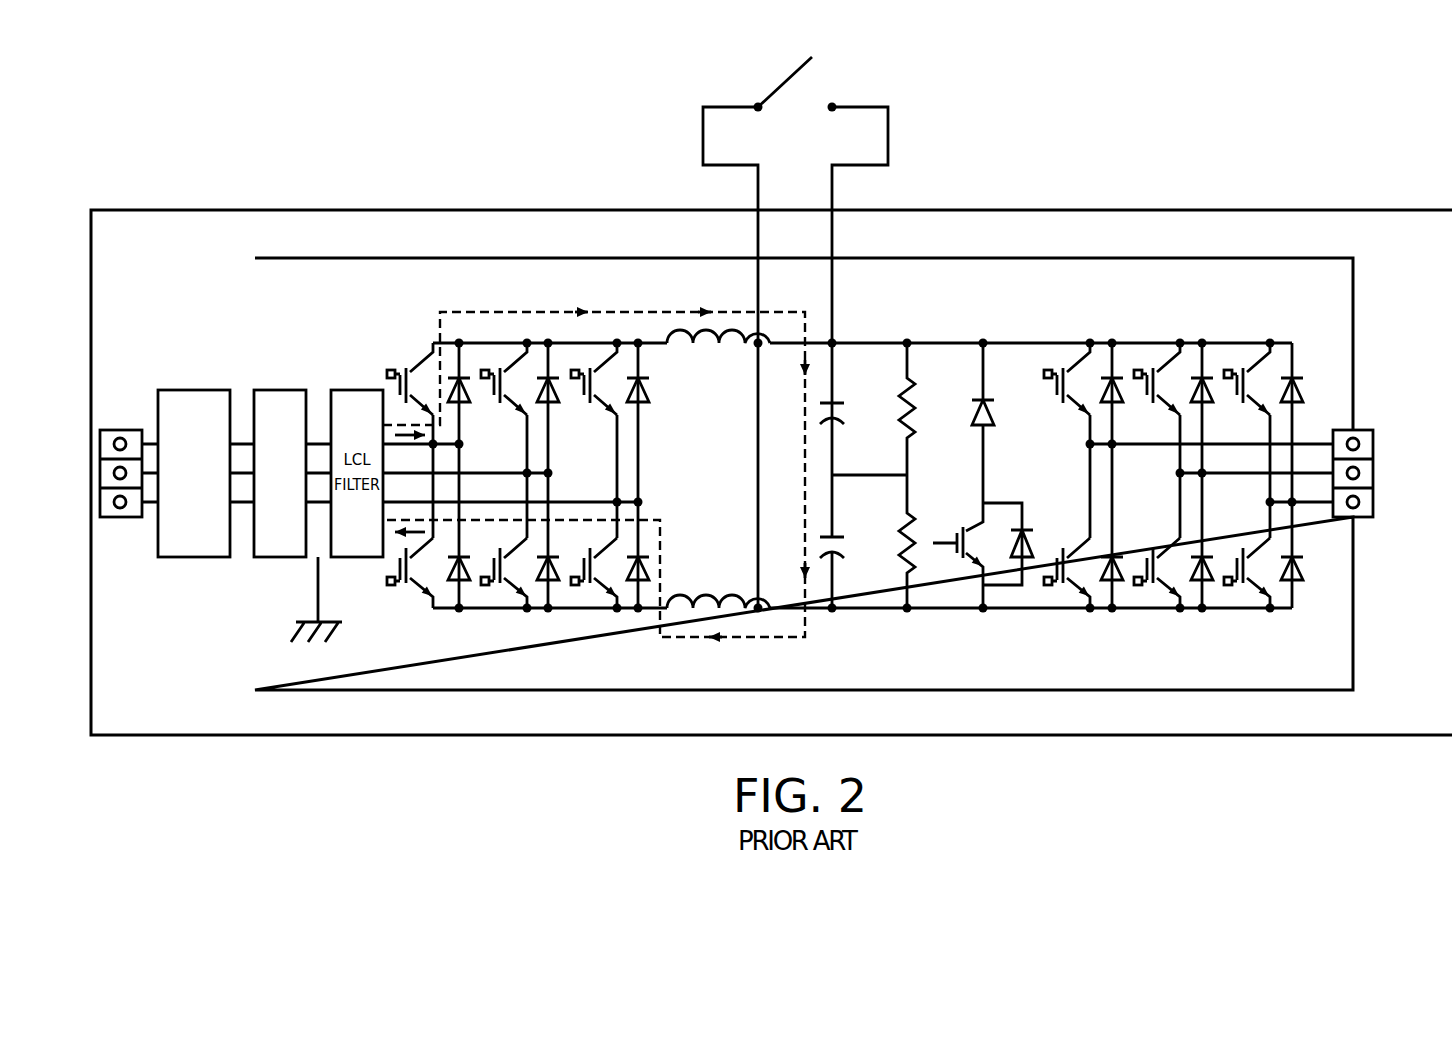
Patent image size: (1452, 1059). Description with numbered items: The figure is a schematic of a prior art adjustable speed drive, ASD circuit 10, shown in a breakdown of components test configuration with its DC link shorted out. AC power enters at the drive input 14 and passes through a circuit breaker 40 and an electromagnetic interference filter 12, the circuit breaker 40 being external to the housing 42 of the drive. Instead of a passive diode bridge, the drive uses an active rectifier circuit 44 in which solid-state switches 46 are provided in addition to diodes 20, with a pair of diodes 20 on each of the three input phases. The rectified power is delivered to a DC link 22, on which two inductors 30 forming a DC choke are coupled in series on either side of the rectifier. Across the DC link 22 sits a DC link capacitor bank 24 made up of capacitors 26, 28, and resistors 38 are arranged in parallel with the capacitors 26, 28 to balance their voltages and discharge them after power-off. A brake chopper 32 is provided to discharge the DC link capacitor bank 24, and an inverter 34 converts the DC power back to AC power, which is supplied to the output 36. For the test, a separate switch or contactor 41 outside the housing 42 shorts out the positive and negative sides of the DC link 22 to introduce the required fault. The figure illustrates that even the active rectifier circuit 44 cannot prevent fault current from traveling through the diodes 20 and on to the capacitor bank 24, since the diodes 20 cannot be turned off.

The ASD circuit 10 is at (1218, 172).
The electromagnetic interference (EMI) filter 12 is at (280, 390).
The drive input 14 is at (123, 428).
The diodes 20 is at (643, 407).
The DC link 22 is at (750, 612).
The DC link capacitor bank 24 is at (805, 482).
The capacitor 26 is at (838, 402).
The capacitor 28 is at (838, 536).
The inductors 30 is at (676, 348).
The brake chopper 32 is at (965, 572).
The inverter 34 is at (1253, 302).
The output 36 is at (1358, 430).
The resistors 38 is at (920, 418).
The circuit breaker 40 is at (192, 390).
The switch (contactor) 41 is at (850, 75).
The housing 42 is at (347, 258).
The active rectifier circuit 44 is at (532, 300).
The solid-state switches 46 is at (428, 366).